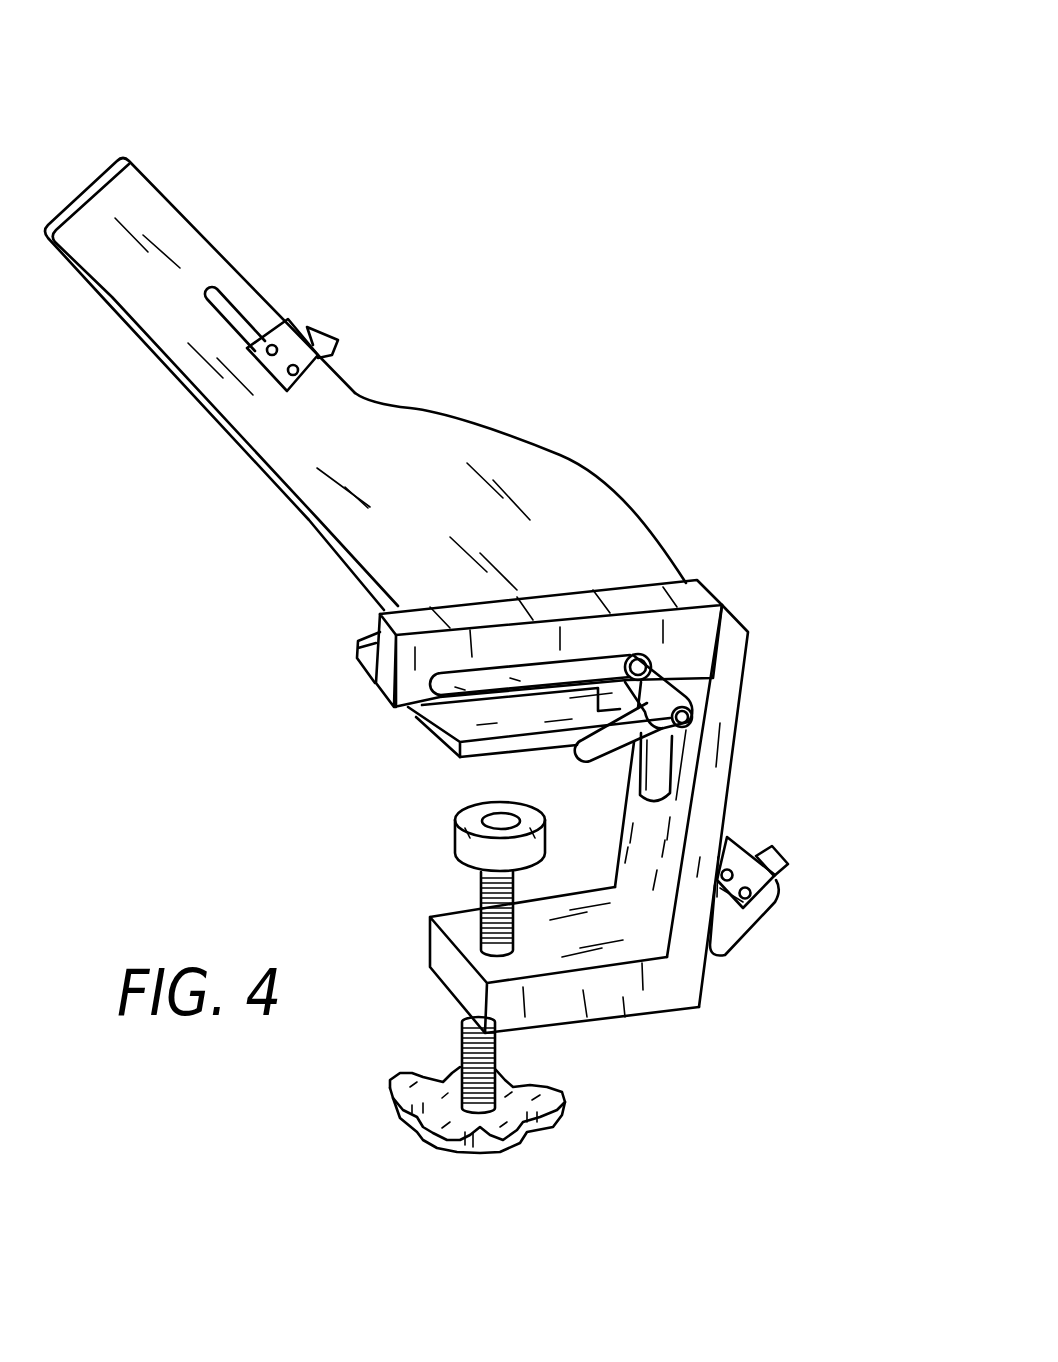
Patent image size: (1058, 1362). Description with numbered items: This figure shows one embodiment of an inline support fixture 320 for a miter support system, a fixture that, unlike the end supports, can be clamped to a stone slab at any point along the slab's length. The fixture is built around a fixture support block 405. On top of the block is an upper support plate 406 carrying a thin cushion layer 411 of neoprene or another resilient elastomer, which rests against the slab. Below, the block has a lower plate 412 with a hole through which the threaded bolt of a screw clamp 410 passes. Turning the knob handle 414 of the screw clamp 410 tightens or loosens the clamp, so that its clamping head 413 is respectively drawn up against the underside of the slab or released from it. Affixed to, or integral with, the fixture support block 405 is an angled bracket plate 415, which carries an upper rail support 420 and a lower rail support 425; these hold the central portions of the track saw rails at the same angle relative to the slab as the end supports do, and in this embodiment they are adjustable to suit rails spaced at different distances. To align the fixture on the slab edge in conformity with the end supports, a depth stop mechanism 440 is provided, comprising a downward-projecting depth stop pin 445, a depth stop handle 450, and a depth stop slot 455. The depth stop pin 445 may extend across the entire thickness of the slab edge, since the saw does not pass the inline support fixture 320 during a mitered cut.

The inline support fixture 320 is at (537, 132).
The fixture support block 405 is at (744, 677).
The upper support plate 406 is at (493, 682).
The screw clamp 410 is at (378, 1193).
The thin cushion layer 411 is at (415, 716).
The lower plate 412 is at (623, 1003).
The clamping head 413 is at (455, 838).
The knob handle 414 is at (395, 1122).
The angled bracket plate 415 is at (538, 444).
The upper rail support 420 is at (293, 322).
The lower rail support 425 is at (746, 855).
The depth stop mechanism 440 is at (363, 641).
The depth stop pin 445 is at (662, 777).
The depth stop handle 450 is at (665, 738).
The depth stop slot 455 is at (433, 727).